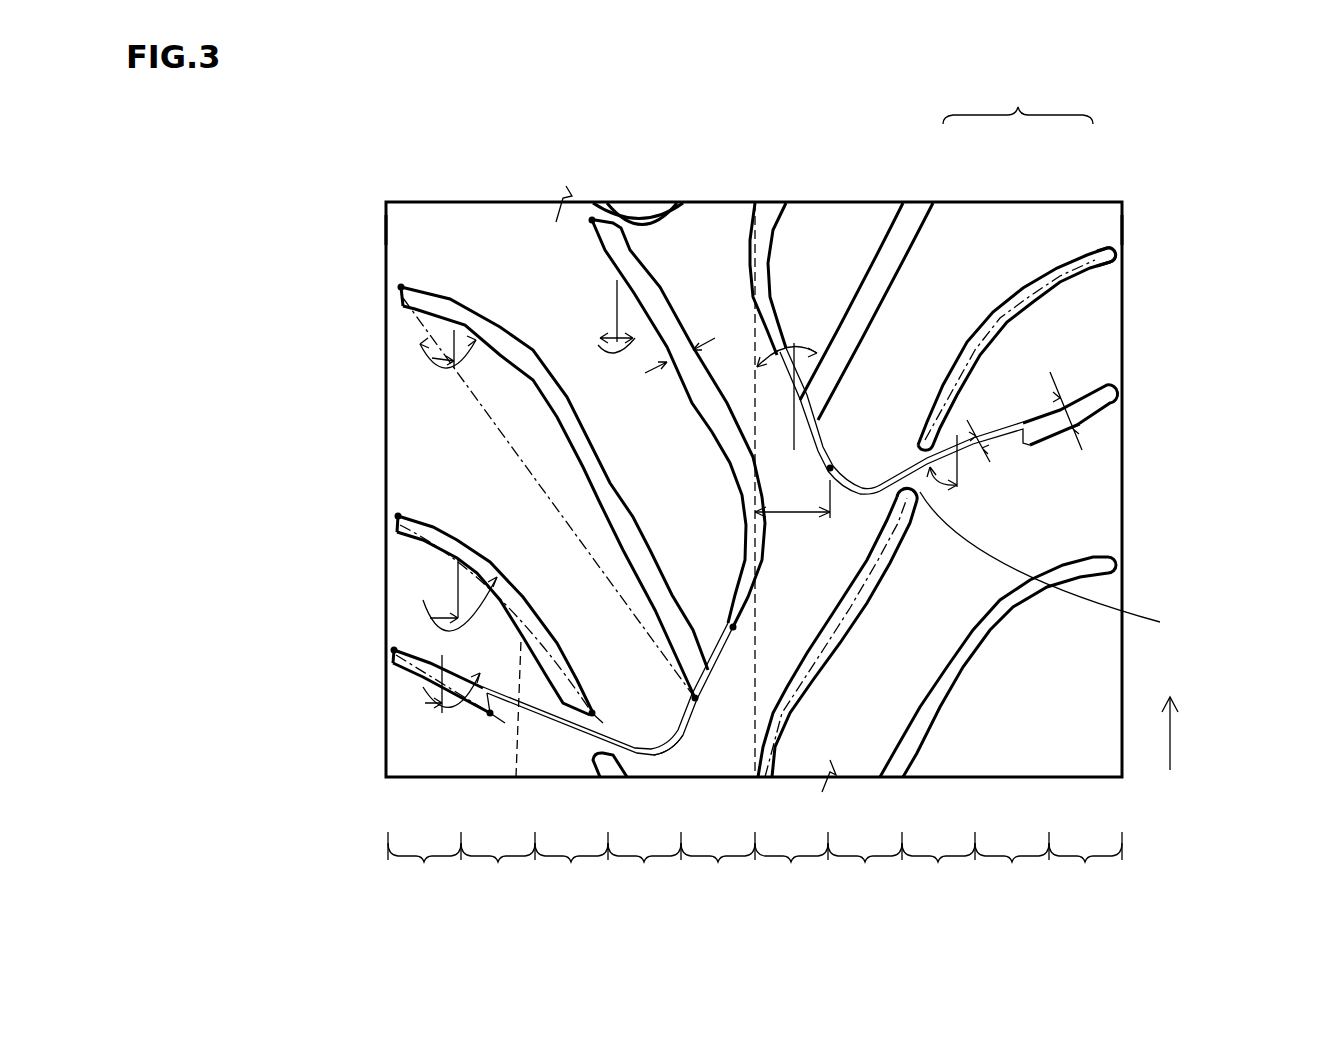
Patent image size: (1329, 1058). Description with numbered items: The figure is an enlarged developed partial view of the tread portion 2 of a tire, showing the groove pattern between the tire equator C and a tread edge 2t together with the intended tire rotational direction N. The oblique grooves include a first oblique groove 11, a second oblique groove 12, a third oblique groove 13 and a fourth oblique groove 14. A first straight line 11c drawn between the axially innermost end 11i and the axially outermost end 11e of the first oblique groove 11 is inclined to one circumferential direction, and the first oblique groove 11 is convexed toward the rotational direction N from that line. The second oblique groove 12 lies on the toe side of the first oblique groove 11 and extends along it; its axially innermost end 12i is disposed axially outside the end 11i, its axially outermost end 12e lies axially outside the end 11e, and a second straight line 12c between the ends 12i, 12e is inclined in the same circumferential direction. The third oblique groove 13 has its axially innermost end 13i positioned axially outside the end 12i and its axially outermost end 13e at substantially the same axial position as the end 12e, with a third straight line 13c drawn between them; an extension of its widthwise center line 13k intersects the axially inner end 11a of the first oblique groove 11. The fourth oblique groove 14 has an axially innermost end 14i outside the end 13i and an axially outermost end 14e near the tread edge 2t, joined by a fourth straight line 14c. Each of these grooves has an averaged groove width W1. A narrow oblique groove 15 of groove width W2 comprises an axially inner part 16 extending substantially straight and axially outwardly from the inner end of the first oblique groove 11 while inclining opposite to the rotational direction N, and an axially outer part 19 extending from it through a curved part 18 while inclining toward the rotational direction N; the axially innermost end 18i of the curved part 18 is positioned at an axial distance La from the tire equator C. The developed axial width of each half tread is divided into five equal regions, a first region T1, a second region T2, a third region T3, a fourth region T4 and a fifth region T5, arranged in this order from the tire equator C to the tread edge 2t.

The tread portion 2 is at (1258, 205).
The tread edge 2t is at (386, 228).
The tire equator C is at (755, 202).
The first oblique groove 11 is at (669, 175).
The axially outermost end of the first oblique groove 11e is at (592, 218).
The axially innermost end of the first oblique groove 11i is at (740, 630).
The first straight line 11c is at (665, 751).
The axially inner end of the first oblique groove 11a is at (1110, 566).
The second oblique groove 12 is at (466, 322).
The axially outermost end of the second oblique groove 12e is at (401, 287).
The second straight line 12c is at (485, 405).
The axially innermost end of the second oblique groove 12i is at (695, 698).
The third oblique groove 13 is at (452, 538).
The axially outermost end of the third oblique groove 13e is at (398, 516).
The third straight line 13c is at (516, 777).
The axially innermost end of the third oblique groove 13i is at (603, 723).
The widthwise center line of the third oblique groove 13k is at (1087, 268).
The fourth oblique groove 14 is at (427, 663).
The axially outermost end of the fourth oblique groove 14e is at (394, 650).
The fourth straight line 14c is at (410, 692).
The axially innermost end of the fourth oblique groove 14i is at (490, 713).
The narrow oblique groove 15 is at (1018, 100).
The axially inner part 16 is at (866, 335).
The curved part 18 is at (845, 470).
The axially innermost end of the curved part 18i is at (833, 492).
The axially outer part 19 is at (983, 465).
The axial distance La is at (793, 513).
The averaged groove width W1 is at (672, 347).
The groove width of the narrow oblique groove W2 is at (990, 452).
The intended tire rotational direction N is at (1170, 714).
The first region T1 is at (754, 859).
The second region T2 is at (755, 859).
The third region T3 is at (755, 859).
The fourth region T4 is at (755, 859).
The fifth region T5 is at (755, 859).